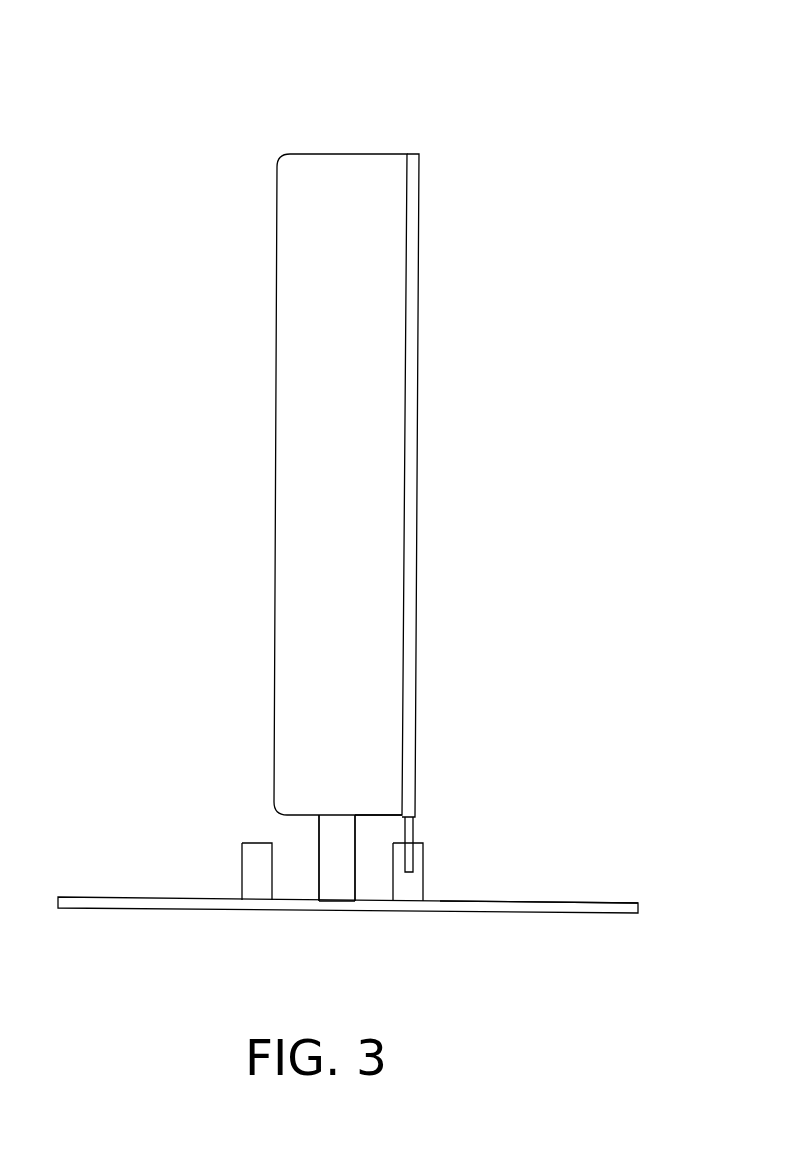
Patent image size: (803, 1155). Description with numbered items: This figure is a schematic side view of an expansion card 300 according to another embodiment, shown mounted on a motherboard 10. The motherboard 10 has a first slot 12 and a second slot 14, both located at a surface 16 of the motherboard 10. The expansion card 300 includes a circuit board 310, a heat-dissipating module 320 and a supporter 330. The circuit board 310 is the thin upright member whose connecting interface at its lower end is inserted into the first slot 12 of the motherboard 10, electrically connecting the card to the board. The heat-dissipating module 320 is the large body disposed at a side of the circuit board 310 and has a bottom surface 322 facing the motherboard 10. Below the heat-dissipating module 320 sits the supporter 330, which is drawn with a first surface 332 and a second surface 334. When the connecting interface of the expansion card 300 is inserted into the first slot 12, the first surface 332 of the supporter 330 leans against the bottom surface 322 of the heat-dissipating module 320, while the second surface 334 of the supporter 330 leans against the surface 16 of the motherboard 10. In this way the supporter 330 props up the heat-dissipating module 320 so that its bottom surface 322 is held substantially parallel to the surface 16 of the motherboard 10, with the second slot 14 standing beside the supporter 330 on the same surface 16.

The expansion card 300 is at (170, 90).
The circuit board 310 is at (416, 213).
The heat-dissipating module 320 is at (278, 214).
The bottom surface 322 is at (370, 815).
The supporter 330 is at (168, 813).
The first surface 332 is at (319, 818).
The second surface 334 is at (333, 901).
The motherboard 10 is at (638, 906).
The first slot 12 is at (418, 877).
The second slot 14 is at (252, 892).
The surface 16 is at (523, 901).